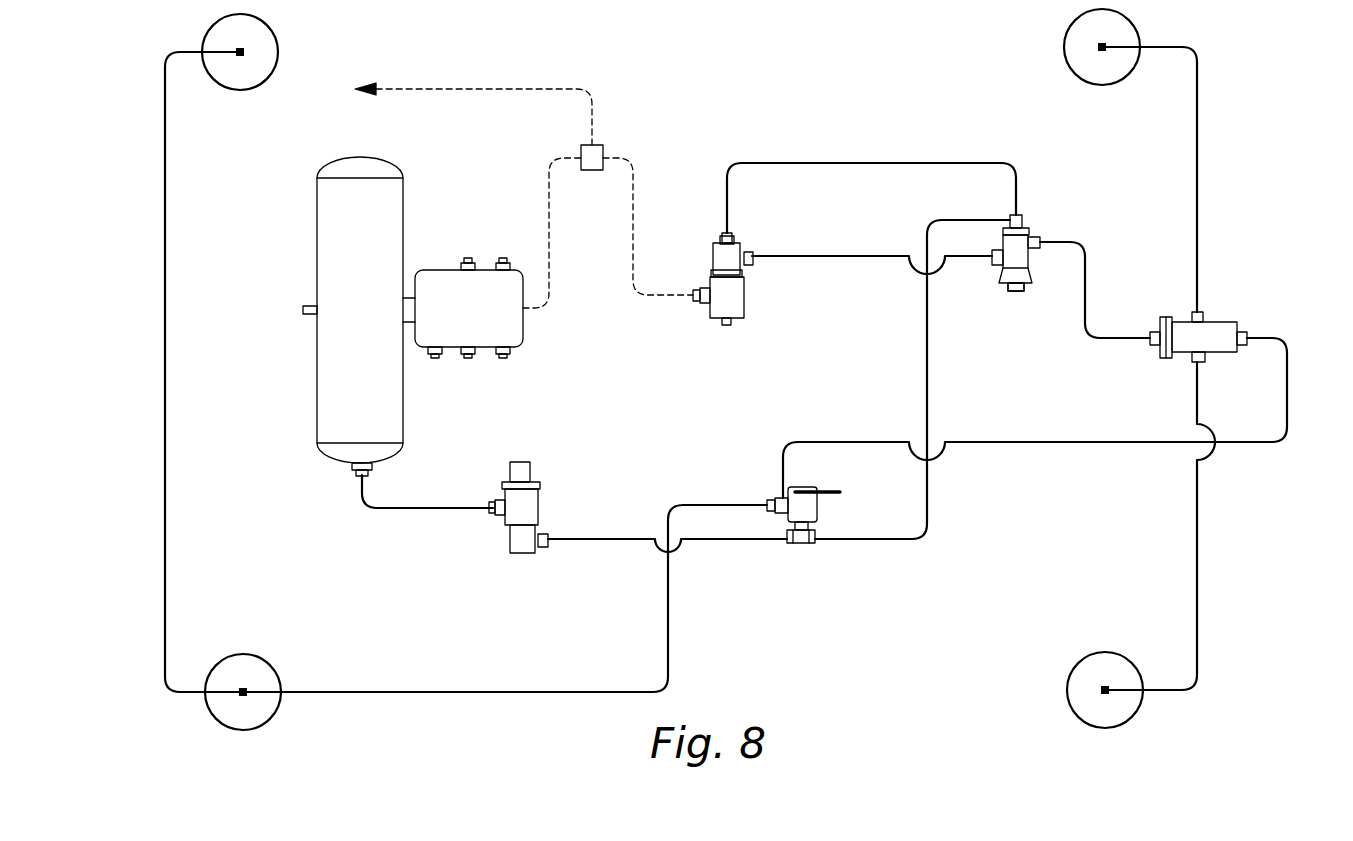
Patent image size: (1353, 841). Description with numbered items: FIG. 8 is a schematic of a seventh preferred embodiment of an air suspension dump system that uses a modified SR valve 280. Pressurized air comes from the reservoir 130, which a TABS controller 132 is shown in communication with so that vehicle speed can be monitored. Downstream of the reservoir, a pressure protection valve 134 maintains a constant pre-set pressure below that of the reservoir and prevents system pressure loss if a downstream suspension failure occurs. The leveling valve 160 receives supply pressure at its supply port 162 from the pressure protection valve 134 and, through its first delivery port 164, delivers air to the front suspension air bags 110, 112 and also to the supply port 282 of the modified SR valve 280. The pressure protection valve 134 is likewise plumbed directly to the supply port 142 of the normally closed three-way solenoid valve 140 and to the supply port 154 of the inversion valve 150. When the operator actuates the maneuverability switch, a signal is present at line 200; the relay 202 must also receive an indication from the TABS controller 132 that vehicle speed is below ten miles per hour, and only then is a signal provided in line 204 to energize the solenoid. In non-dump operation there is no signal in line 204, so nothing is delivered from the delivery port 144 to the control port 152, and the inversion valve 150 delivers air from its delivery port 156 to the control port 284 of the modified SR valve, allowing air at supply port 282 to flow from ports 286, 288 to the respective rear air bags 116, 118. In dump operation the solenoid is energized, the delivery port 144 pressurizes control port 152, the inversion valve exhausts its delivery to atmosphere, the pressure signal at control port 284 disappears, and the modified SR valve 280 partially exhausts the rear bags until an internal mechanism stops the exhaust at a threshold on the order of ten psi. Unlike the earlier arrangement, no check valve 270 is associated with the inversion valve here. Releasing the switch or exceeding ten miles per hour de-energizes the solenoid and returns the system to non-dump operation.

The front air bag 110 is at (262, 36).
The front air bag 112 is at (260, 712).
The rear air bag 116 is at (1123, 30).
The rear air bag 118 is at (1125, 708).
The reservoir 130 is at (385, 232).
The TABS controller 132 is at (478, 337).
The pressure protection valve 134 is at (530, 500).
The solenoid valve 140 is at (726, 296).
The supply port 142 is at (737, 240).
The delivery port 144 is at (752, 262).
The inversion valve 150 is at (1027, 235).
The control port 152 is at (1000, 265).
The supply port 154 is at (1010, 218).
The delivery port 156 is at (1040, 243).
The leveling valve 160 is at (814, 518).
The supply port 162 is at (805, 545).
The first delivery port 164 is at (775, 497).
The line 200 is at (592, 118).
The relay 202 is at (578, 147).
The line 204 is at (633, 263).
The check valve 270 is at (1020, 312).
The modified SR valve 280 is at (1199, 318).
The supply port 282 is at (1245, 332).
The control port 284 is at (1152, 348).
The port 286 is at (1193, 316).
The port 288 is at (1205, 362).